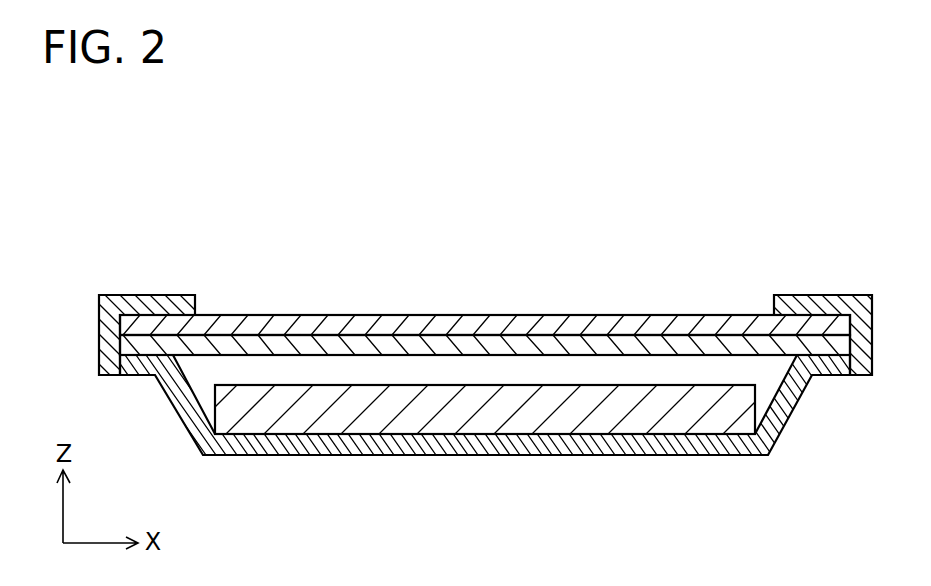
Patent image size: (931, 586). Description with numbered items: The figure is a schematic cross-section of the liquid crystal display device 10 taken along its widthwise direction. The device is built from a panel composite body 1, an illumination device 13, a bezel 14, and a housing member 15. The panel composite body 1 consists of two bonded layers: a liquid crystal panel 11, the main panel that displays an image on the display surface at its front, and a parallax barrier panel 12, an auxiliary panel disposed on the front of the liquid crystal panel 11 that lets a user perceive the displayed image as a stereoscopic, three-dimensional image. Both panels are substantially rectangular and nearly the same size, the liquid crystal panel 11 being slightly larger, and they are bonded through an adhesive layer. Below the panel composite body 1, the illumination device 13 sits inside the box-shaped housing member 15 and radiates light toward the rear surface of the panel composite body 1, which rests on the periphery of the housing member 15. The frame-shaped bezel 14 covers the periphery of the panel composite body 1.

The panel composite body 1 is at (550, 222).
The liquid crystal display device 10 is at (640, 228).
The liquid crystal panel 11 is at (498, 350).
The parallax barrier panel 12 is at (385, 327).
The illumination device 13 is at (572, 413).
The bezel 14 is at (166, 295).
The housing member 15 is at (425, 445).